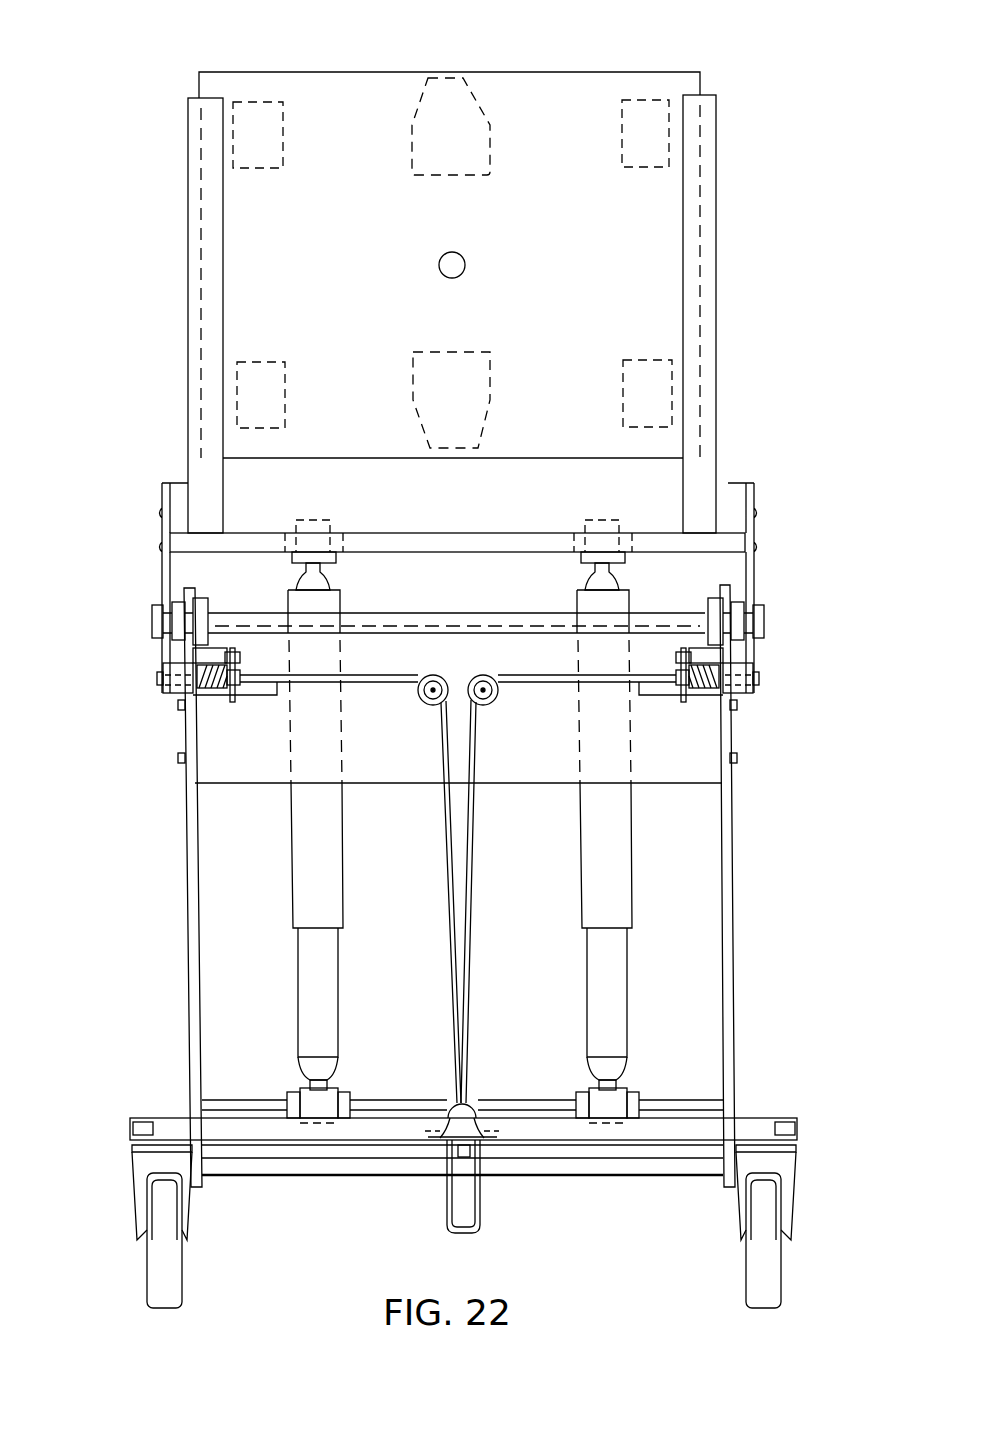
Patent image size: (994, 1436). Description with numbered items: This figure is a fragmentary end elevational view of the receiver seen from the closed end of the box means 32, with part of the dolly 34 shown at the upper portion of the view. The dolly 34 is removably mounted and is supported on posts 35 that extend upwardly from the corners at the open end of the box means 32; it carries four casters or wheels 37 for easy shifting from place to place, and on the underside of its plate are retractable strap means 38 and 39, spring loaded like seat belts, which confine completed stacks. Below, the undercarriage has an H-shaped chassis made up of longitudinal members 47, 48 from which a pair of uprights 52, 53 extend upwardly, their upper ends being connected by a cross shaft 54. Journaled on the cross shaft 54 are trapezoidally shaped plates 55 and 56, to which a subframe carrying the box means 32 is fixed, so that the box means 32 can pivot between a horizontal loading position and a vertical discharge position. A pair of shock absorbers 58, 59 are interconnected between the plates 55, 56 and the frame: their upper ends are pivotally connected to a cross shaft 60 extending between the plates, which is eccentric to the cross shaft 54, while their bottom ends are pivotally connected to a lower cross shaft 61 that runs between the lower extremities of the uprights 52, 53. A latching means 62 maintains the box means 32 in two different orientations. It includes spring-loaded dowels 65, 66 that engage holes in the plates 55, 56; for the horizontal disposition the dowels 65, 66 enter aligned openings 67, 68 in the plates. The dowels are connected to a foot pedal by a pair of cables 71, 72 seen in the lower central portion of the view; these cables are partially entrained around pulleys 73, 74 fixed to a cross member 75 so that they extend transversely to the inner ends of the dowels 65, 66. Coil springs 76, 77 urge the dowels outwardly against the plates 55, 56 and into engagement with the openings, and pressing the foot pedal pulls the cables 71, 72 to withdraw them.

The box means 32 is at (449, 511).
The dolly 34 is at (552, 250).
The posts 35 is at (707, 190).
The casters or wheels 37 is at (658, 375).
The retractable strap means 38 is at (445, 120).
The retractable strap means 39 is at (415, 397).
The longitudinal member 47 is at (790, 1130).
The longitudinal member 48 is at (130, 1125).
The upright 52 is at (735, 938).
The upright 53 is at (190, 878).
The cross shaft 54 is at (447, 622).
The trapezoidally shaped plate 55 is at (758, 590).
The trapezoidally shaped plate 56 is at (162, 573).
The shock absorber 58 is at (628, 908).
The shock absorber 59 is at (298, 908).
The cross shaft 60 is at (258, 540).
The lower cross shaft 61 is at (397, 1105).
The latching means 62 is at (488, 866).
The spring-loaded dowel 65 is at (760, 676).
The spring-loaded dowel 66 is at (158, 680).
The opening 67 is at (758, 662).
The opening 68 is at (163, 672).
The cable 71 is at (470, 925).
The cable 72 is at (452, 880).
The pulley 73 is at (498, 700).
The pulley 74 is at (419, 697).
The cross member 75 is at (686, 740).
The coil spring 76 is at (705, 690).
The coil spring 77 is at (205, 690).